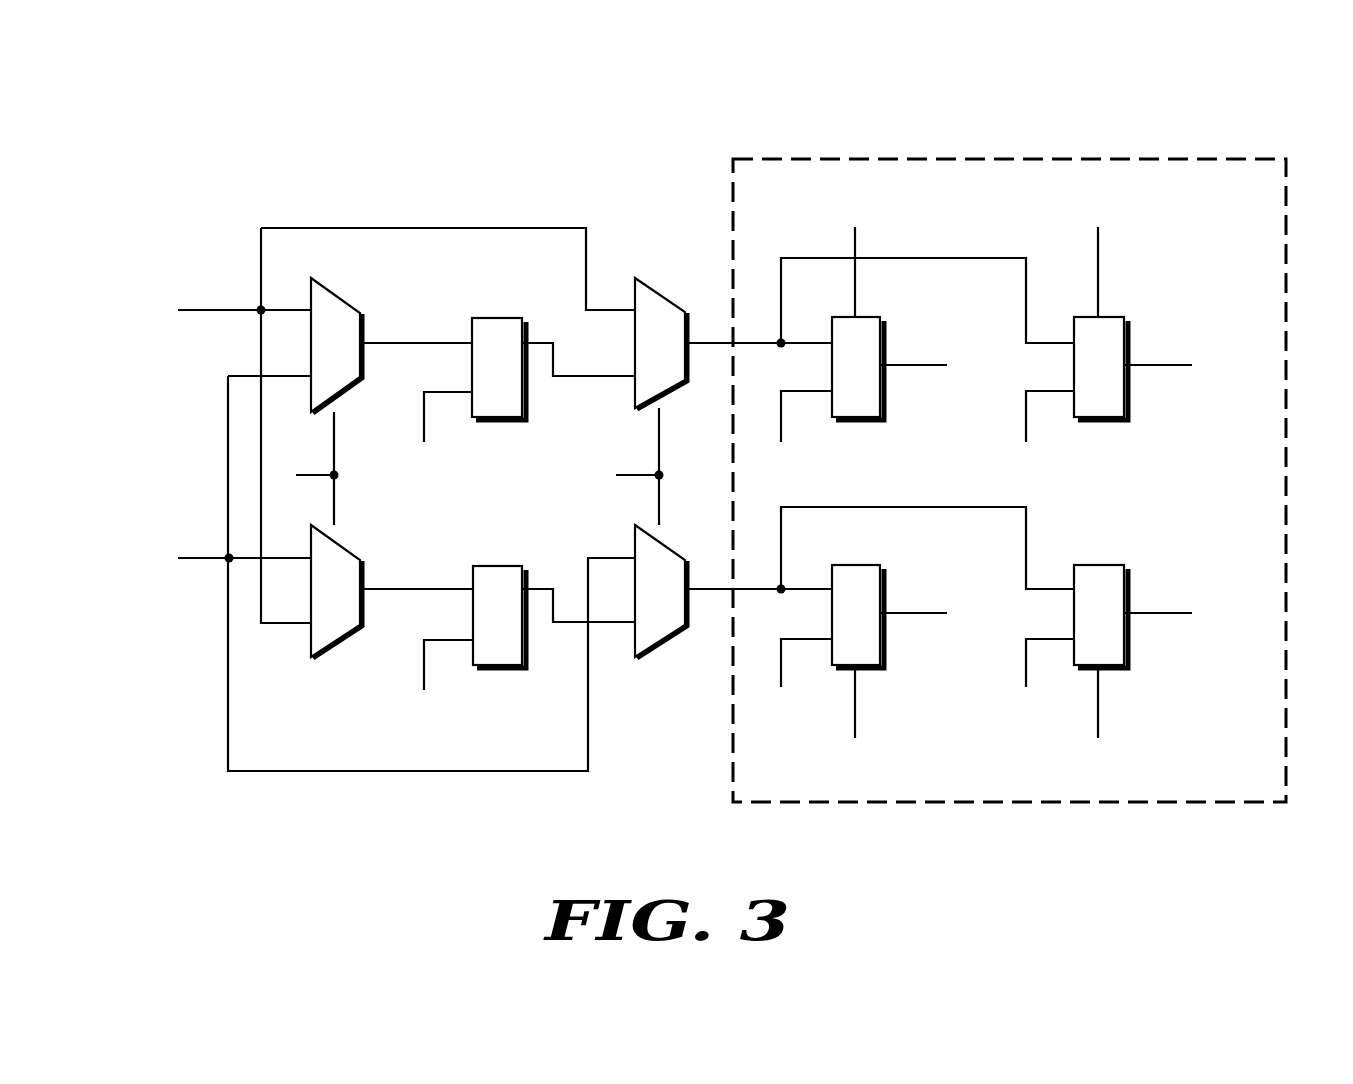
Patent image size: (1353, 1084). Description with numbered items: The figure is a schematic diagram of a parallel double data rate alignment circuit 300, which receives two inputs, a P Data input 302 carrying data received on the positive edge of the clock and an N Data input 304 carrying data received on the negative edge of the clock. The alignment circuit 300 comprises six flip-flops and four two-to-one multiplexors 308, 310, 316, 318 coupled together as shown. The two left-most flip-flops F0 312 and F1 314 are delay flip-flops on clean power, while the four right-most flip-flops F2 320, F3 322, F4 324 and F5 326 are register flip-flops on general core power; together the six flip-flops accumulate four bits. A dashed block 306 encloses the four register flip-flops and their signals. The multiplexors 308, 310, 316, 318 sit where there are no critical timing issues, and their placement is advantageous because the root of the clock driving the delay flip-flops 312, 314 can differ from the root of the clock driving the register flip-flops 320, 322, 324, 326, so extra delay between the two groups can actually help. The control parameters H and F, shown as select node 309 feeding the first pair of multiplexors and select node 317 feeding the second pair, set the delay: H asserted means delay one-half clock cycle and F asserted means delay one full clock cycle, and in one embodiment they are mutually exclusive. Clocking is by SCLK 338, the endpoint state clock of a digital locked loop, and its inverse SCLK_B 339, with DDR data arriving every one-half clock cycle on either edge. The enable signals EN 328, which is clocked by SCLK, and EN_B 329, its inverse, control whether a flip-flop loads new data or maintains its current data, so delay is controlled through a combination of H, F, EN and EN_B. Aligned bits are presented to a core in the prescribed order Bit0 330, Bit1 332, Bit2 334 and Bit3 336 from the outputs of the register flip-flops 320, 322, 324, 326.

The parallel double data rate alignment circuit 300 is at (1220, 94).
The P Data input 302 is at (194, 308).
The N Data input 304 is at (194, 556).
The output register block 306 is at (989, 158).
The multiplexor 308 is at (334, 295).
The H select node 309 is at (336, 473).
The multiplexor 310 is at (343, 643).
The flip-flop F0 312 is at (501, 317).
The flip-flop F1 314 is at (502, 565).
The multiplexor 316 is at (655, 287).
The H+F select node 317 is at (661, 474).
The multiplexor 318 is at (672, 644).
The flip-flop F2 320 is at (882, 422).
The flip-flop F3 322 is at (855, 563).
The flip-flop F4 324 is at (1113, 422).
The flip-flop F5 326 is at (1098, 563).
The EN 328 is at (857, 244).
The EN_B 329 is at (1100, 269).
The Bit0 330 is at (905, 363).
The Bit1 332 is at (905, 611).
The Bit2 334 is at (1150, 363).
The Bit3 336 is at (1150, 611).
The SCLK 338 is at (416, 480).
The SCLK_B 339 is at (416, 727).